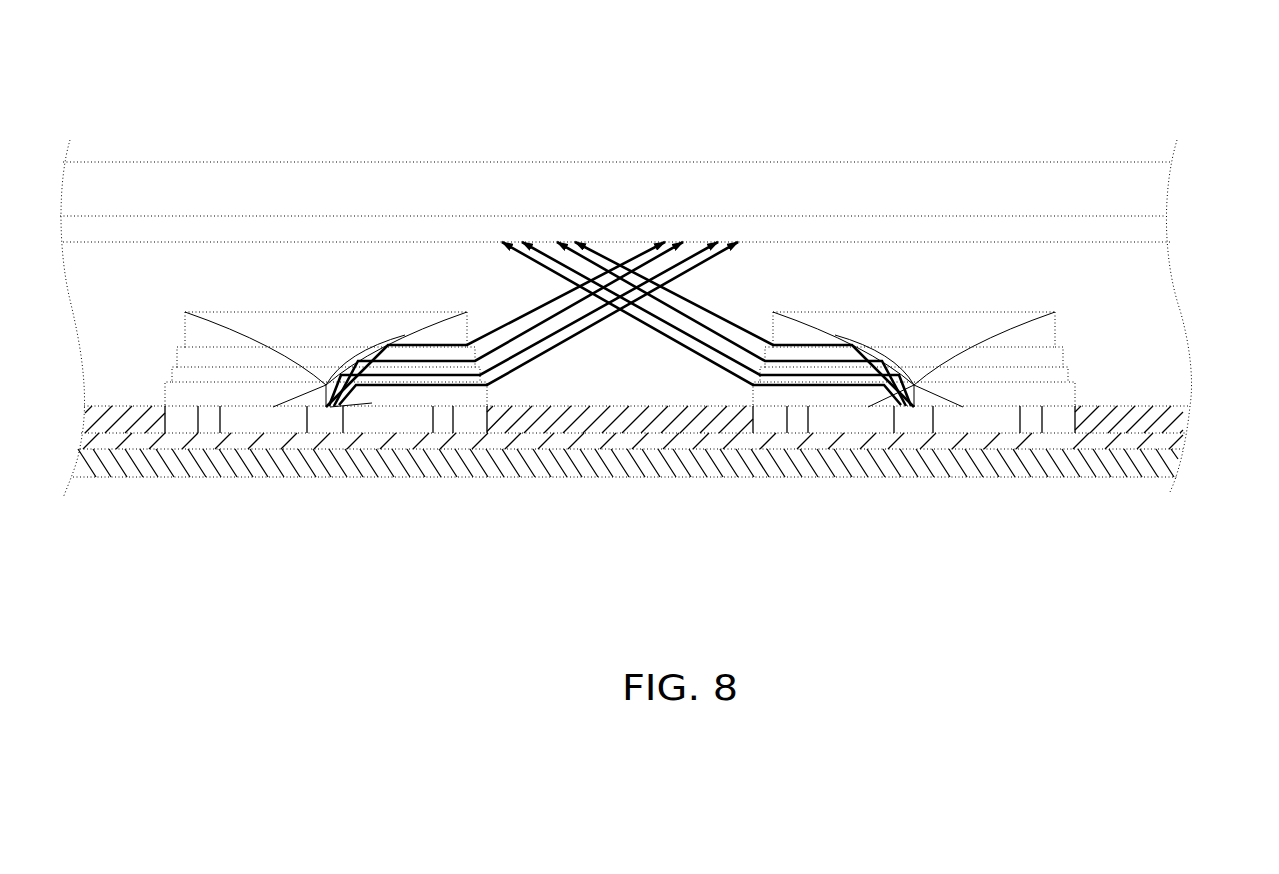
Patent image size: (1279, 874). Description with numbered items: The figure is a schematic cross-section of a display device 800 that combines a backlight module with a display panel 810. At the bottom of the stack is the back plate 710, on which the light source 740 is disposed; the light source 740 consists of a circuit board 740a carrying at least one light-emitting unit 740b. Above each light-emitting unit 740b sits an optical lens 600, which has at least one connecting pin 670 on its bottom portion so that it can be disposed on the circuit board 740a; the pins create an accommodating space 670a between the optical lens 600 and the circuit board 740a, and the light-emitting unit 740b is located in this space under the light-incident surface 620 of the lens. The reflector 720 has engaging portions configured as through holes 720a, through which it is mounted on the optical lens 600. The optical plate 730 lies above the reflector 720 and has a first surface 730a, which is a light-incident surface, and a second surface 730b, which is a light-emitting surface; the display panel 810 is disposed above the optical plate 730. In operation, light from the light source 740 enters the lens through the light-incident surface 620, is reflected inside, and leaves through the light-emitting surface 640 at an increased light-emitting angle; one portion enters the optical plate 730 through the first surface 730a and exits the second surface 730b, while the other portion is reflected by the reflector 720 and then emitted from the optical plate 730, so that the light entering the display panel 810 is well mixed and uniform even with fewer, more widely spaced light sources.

The display device 800 is at (93, 72).
The display panel 810 is at (1160, 187).
The optical plate 730 is at (660, 229).
The first surface 730a is at (998, 242).
The second surface 730b is at (998, 216).
The optical lens 600 is at (170, 358).
The light-emitting surface 640 is at (472, 380).
The light source 740 is at (618, 517).
The circuit board 740a is at (852, 433).
The light-emitting unit 740b is at (329, 420).
The connecting pin 670 is at (213, 422).
The accommodating space 670a is at (390, 420).
The light-incident surface 620 is at (298, 400).
The reflector 720 is at (1184, 420).
The through hole 720a is at (177, 433).
The back plate 710 is at (1183, 460).